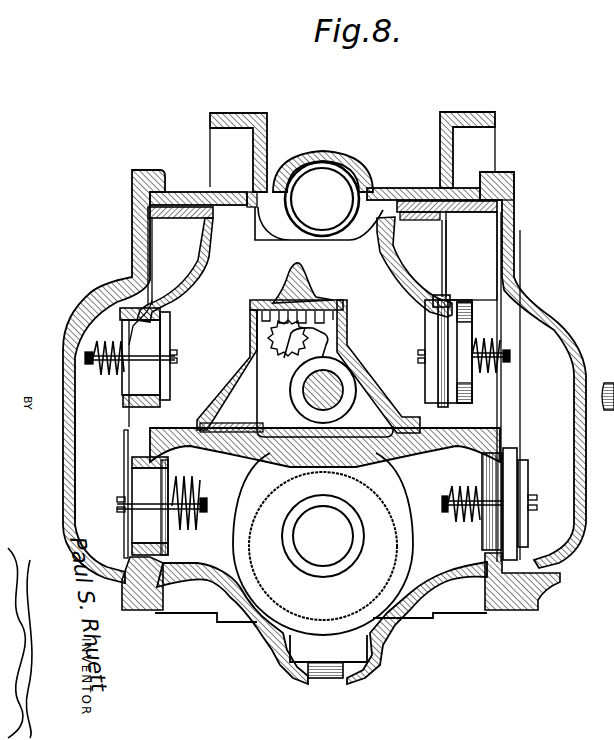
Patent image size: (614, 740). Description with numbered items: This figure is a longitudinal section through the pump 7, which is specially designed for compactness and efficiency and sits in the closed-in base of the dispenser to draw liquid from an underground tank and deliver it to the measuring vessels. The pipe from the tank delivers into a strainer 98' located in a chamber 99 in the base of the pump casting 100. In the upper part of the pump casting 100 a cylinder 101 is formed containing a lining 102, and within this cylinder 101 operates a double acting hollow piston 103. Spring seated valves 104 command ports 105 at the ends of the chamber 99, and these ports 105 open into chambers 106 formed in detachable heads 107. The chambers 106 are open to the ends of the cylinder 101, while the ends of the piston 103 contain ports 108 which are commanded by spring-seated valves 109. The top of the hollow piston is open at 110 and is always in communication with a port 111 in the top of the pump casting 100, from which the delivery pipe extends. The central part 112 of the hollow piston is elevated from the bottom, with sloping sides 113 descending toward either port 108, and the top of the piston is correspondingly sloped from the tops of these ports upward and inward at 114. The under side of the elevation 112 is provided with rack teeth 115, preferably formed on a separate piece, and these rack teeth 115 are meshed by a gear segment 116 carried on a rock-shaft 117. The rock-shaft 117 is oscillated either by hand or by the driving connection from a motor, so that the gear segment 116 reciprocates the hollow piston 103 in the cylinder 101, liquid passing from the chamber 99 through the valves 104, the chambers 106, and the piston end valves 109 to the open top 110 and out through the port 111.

The pump 7 is at (522, 246).
The strainer 98' is at (323, 565).
The chamber 99 is at (213, 562).
The pump casting 100 is at (135, 463).
The cylinder 101 is at (478, 237).
The lining 102 is at (514, 181).
The double acting hollow piston 103 is at (158, 250).
The spring seated valves 104 is at (125, 532).
The ports 105 is at (148, 533).
The chambers 106 is at (88, 440).
The detachable heads 107 is at (65, 366).
The ports 108 is at (132, 330).
The spring-seated valves 109 is at (171, 329).
The open top of the hollow piston 110 is at (252, 195).
The port 111 is at (330, 183).
The central part of the hollow piston 112 is at (347, 309).
The sloping sides 113 is at (222, 378).
The sloped top of the piston 114 is at (204, 262).
The rack teeth 115 is at (277, 311).
The gear segment 116 is at (283, 347).
The rock-shaft 117 is at (313, 393).